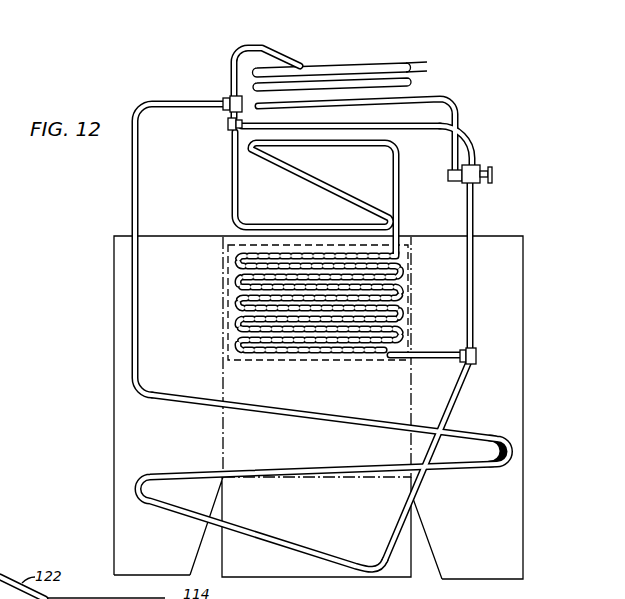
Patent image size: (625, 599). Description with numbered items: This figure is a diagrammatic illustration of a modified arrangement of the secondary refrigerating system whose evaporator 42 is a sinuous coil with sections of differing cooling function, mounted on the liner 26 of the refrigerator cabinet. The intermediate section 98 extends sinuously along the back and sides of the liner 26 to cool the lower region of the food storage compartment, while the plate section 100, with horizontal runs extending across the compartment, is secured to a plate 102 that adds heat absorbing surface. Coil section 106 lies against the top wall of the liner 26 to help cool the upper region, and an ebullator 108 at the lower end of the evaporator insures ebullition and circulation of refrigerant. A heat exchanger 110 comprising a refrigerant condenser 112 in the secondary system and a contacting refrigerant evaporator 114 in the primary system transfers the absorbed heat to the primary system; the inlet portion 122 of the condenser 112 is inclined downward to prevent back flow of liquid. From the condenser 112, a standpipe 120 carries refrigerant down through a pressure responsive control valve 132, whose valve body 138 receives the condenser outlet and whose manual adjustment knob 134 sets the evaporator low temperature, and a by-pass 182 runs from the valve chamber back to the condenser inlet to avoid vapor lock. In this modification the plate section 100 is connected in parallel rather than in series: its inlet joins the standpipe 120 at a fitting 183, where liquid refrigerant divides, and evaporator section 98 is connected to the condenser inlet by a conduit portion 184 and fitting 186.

The liner 26 is at (229, 168).
The evaporator 42 is at (511, 446).
The intermediate section 98 is at (336, 412).
The plate section 100 is at (413, 292).
The plate 102 is at (413, 305).
The coil section 106 is at (306, 180).
The ebullator 108 is at (357, 572).
The heat exchanger 110 is at (412, 85).
The refrigerant condenser 112 is at (335, 103).
The refrigerant evaporator 114 is at (428, 66).
The standpipe 120 is at (455, 148).
The inlet portion 122 is at (267, 53).
The control valve 132 is at (481, 183).
The manual adjustment knob 134 is at (493, 175).
The valve body 138 is at (452, 181).
The by-pass 182 is at (473, 134).
The fitting 183 is at (474, 360).
The conduit portion 184 is at (138, 282).
The fitting 186 is at (230, 97).